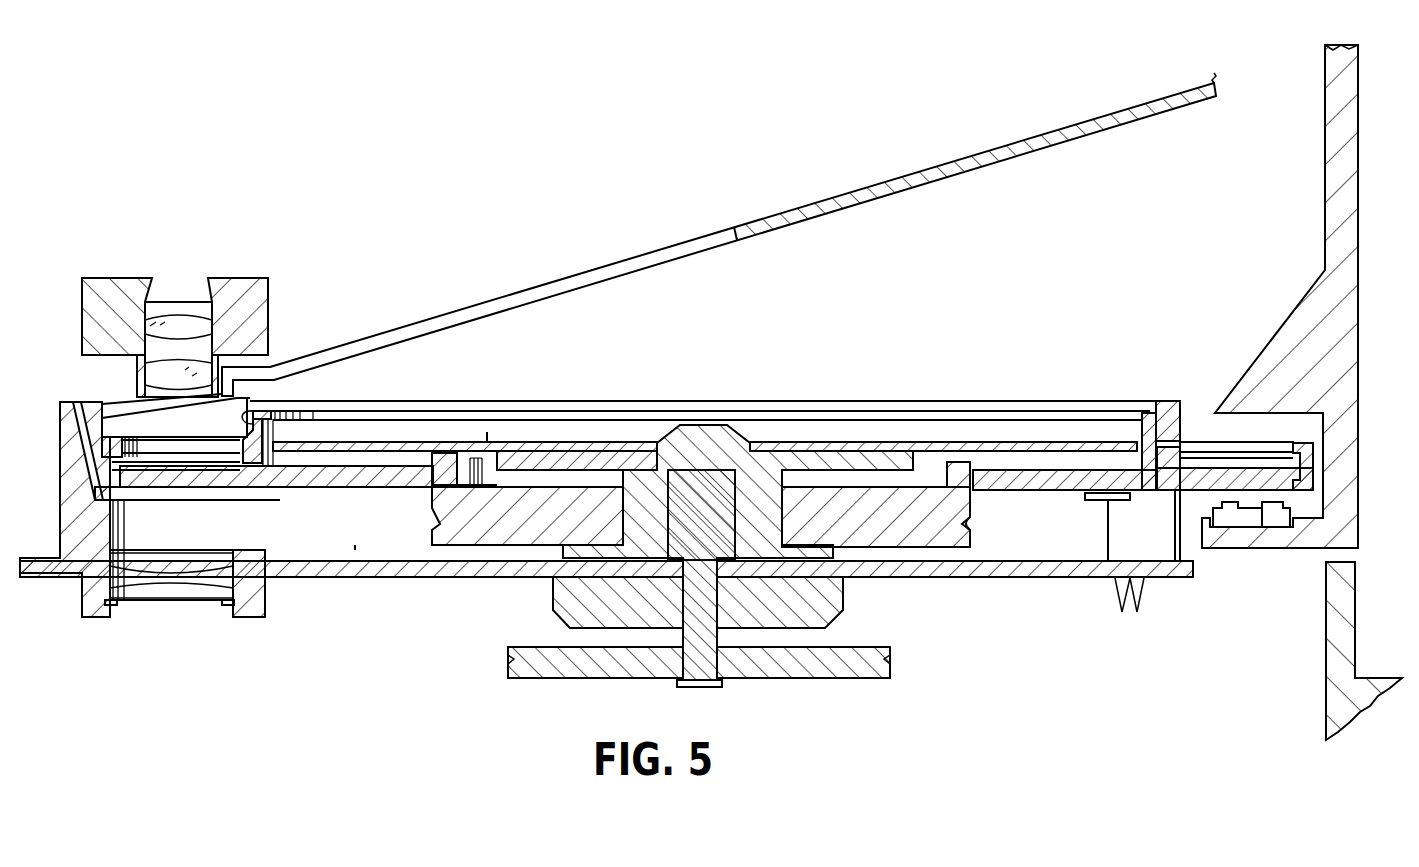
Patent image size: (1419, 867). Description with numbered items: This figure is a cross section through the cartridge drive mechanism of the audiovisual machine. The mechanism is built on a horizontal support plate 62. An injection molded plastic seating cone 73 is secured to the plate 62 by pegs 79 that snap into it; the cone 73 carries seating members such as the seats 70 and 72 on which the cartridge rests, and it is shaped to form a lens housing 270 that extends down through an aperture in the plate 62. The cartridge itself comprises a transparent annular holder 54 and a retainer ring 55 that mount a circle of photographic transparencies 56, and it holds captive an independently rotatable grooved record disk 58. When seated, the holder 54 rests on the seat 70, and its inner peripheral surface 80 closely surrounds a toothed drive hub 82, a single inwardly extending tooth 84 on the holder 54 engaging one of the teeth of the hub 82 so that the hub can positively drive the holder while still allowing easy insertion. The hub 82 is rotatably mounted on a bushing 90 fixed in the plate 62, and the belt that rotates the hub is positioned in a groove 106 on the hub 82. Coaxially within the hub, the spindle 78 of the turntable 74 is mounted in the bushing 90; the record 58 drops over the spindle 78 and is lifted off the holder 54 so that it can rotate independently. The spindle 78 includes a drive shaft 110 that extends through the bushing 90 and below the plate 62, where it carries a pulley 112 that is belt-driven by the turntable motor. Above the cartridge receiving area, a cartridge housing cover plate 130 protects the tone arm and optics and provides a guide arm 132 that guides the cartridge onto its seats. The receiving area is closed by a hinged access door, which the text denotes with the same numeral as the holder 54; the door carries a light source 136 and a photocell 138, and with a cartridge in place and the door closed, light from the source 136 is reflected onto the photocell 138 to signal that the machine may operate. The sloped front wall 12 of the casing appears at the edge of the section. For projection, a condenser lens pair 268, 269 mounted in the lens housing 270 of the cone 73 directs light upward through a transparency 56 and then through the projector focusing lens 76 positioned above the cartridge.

The sloped front wall 12 is at (1358, 622).
The annular holder 54 is at (1346, 183).
The retainer ring 55 is at (253, 406).
The photographic transparencies 56 is at (182, 454).
The grooved record disk 58 is at (484, 433).
The support plate 62 is at (1065, 576).
The seating member 70 is at (136, 492).
The seating member 72 is at (1117, 500).
The seating cone 73 is at (62, 435).
The turntable 74 is at (550, 450).
The focusing lens 76 is at (268, 304).
The spindle 78 is at (727, 423).
The pegs 79 is at (1140, 595).
The inner peripheral surface 80 is at (975, 489).
The toothed drive hub 82 is at (453, 547).
The inwardly extending tooth 84 is at (435, 474).
The bushing 90 is at (836, 607).
The groove 106 is at (973, 523).
The drive shaft 110 is at (688, 640).
The pulley 112 is at (774, 660).
The cartridge housing cover plate 130 is at (864, 187).
The guide arm 132 is at (430, 317).
The light source 136 is at (1226, 504).
The photocell 138 is at (1275, 504).
The condenser lens 268 is at (200, 592).
The condenser lens 269 is at (142, 576).
The lens housing 270 is at (265, 617).